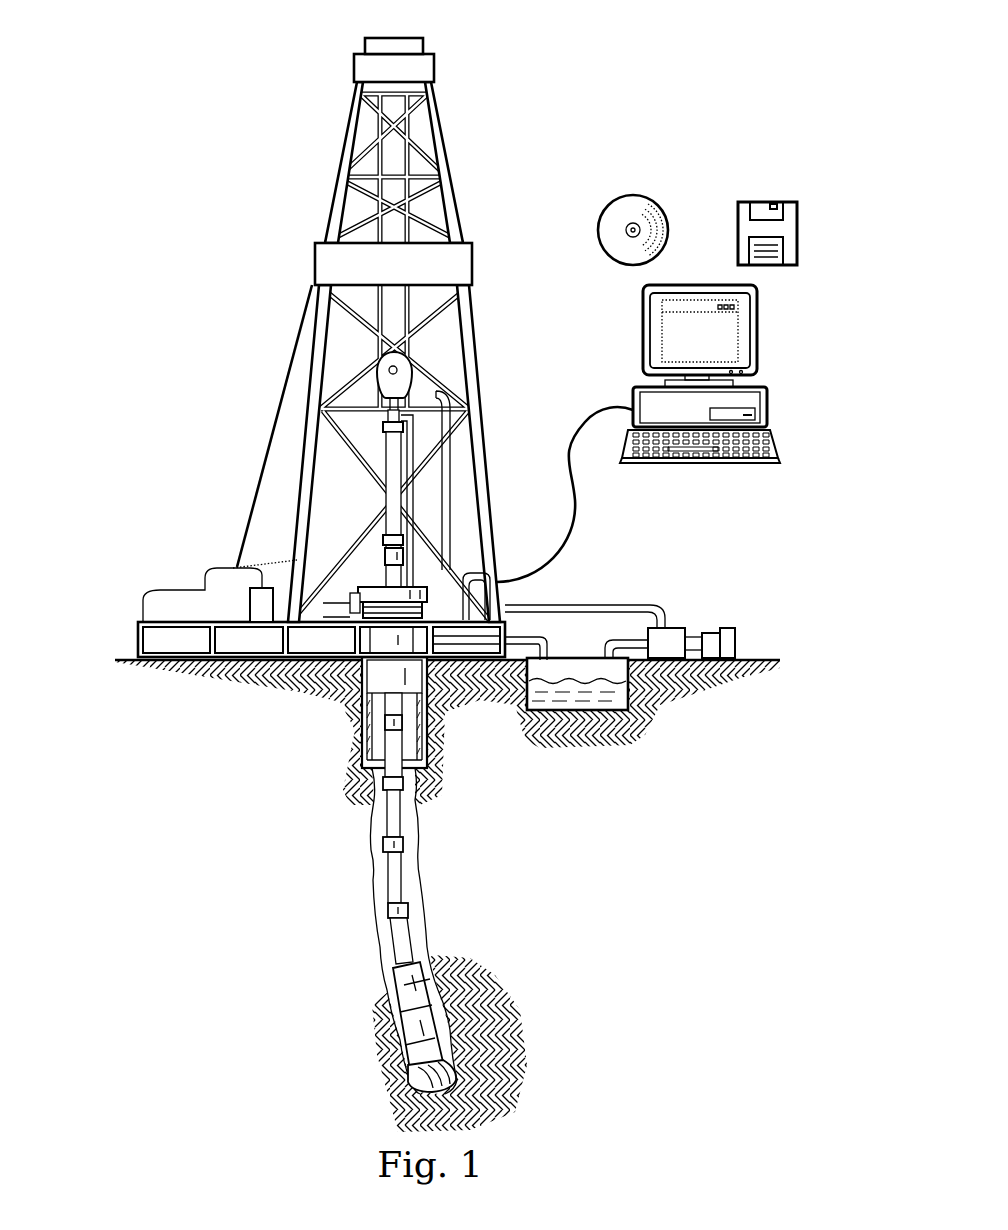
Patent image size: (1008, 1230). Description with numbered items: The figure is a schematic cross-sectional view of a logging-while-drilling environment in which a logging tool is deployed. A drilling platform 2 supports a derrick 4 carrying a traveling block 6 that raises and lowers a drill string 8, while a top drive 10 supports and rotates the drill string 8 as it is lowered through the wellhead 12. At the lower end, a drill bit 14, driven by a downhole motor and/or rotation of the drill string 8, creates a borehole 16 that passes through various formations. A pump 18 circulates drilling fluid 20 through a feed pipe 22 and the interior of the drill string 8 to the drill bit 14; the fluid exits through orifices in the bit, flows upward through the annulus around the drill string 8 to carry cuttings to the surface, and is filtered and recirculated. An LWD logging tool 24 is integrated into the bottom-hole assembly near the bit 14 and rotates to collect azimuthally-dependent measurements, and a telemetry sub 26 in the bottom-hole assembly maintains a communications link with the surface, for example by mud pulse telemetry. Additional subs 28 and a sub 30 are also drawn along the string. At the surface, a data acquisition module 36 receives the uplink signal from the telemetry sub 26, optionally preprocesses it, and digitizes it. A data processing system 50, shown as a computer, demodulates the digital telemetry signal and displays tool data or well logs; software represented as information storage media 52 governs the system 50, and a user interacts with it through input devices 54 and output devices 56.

The drilling platform 2 is at (138, 640).
The derrick 4 is at (450, 158).
The traveling block 6 is at (413, 377).
The drill string 8 is at (402, 813).
The top drive 10 is at (380, 445).
The wellhead 12 is at (372, 583).
The drill bit 14 is at (410, 1085).
The borehole 16 is at (372, 858).
The pump 18 is at (680, 628).
The drilling fluid 20 is at (562, 683).
The feed pipe 22 is at (576, 606).
The LWD logging tool 24 is at (400, 1035).
The telemetry sub 26 is at (390, 995).
The sensors / subs on kelly 28 is at (403, 558).
The tool joint / sub 30 is at (403, 845).
The data acquisition module 36 is at (237, 567).
The data processing system 50 is at (767, 405).
The information storage media 52 is at (768, 202).
The input devices 54 is at (778, 443).
The output devices 56 is at (643, 330).